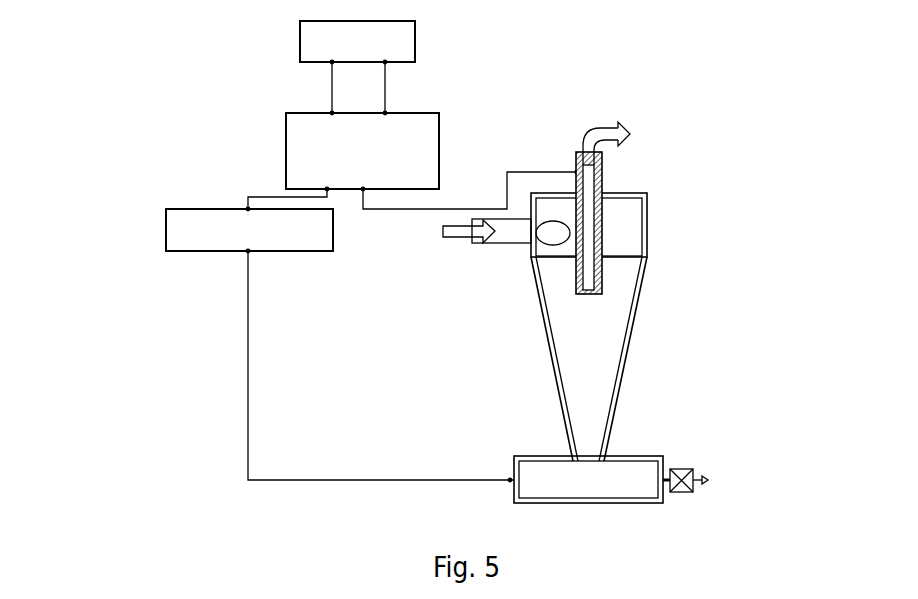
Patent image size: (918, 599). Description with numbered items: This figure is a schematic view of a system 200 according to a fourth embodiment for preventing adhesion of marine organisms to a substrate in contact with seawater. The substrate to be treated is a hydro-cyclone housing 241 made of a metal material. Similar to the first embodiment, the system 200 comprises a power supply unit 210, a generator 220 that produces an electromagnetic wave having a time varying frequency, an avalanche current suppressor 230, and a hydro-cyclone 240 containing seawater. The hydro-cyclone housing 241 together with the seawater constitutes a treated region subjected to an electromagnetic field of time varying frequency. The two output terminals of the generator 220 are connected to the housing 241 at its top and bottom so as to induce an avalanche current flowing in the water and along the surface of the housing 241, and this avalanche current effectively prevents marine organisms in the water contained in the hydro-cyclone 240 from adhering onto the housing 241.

The system 200 is at (742, 180).
The power supply unit 210 is at (318, 40).
The generator 220 is at (310, 146).
The avalanche current suppressor 230 is at (197, 232).
The hydro-cyclone 240 is at (592, 340).
The hydro-cyclone housing 241 is at (542, 323).